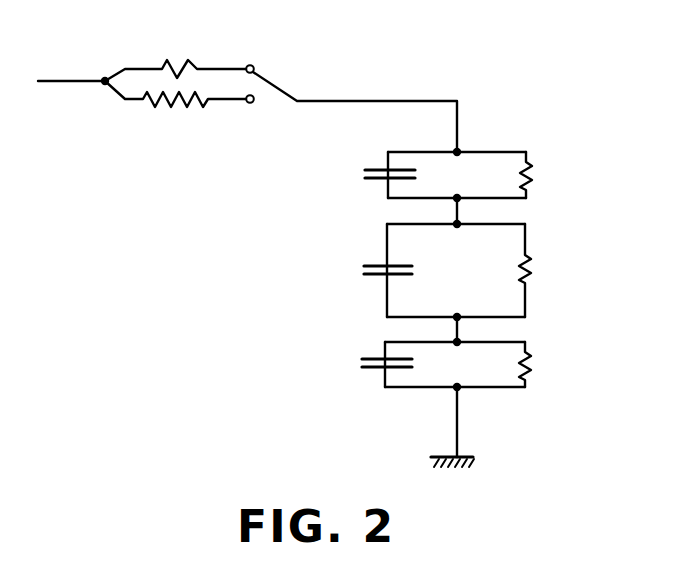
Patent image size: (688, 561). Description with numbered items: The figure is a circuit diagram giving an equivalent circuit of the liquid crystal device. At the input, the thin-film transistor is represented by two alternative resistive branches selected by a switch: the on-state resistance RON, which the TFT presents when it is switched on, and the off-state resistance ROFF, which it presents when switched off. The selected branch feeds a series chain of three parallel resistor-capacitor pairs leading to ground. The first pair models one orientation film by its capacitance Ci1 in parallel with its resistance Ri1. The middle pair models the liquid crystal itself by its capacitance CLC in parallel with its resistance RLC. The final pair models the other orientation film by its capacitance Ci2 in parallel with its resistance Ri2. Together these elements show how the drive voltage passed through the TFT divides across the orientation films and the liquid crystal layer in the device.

The on-state TFT resistance RON is at (179, 54).
The off-state TFT resistance ROFF is at (179, 113).
The first orientation film capacitance Ci1 is at (362, 175).
The first orientation film resistance Ri1 is at (554, 175).
The liquid crystal capacitance CLC is at (359, 270).
The liquid crystal resistance RLC is at (556, 270).
The second orientation film capacitance Ci2 is at (359, 364).
The second orientation film resistance Ri2 is at (552, 364).